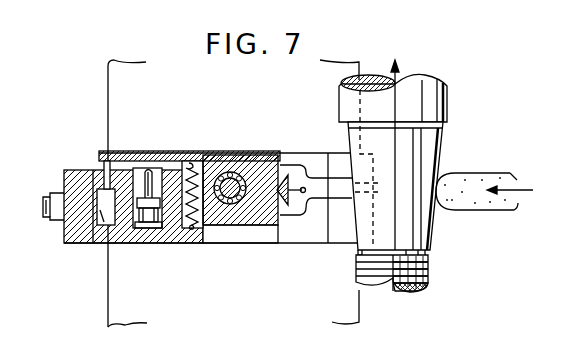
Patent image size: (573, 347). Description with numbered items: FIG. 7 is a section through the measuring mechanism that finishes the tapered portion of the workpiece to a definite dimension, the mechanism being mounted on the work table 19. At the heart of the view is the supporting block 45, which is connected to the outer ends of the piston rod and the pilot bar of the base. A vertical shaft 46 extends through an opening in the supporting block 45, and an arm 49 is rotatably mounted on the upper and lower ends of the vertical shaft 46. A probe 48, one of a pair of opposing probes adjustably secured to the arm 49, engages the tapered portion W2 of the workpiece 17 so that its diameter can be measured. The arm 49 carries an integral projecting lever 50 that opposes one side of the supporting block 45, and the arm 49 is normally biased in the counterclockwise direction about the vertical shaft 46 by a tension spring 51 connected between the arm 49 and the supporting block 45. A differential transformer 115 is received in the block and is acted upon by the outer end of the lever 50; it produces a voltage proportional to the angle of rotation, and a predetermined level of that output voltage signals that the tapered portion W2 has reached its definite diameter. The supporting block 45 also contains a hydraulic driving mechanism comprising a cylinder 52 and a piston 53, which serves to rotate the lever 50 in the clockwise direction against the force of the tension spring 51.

The work table 19 is at (221, 193).
The supporting block 45 is at (115, 151).
The vertical shaft 46 is at (231, 171).
The projecting lever 50 is at (181, 162).
The workpiece 17 is at (458, 182).
The probe 48 is at (340, 190).
The tapered portion W2 is at (428, 228).
The differential transformer 115 is at (100, 246).
The cylinder 52 is at (130, 240).
The piston 53 is at (151, 240).
The tension spring 51 is at (204, 242).
The arm 49 is at (247, 226).